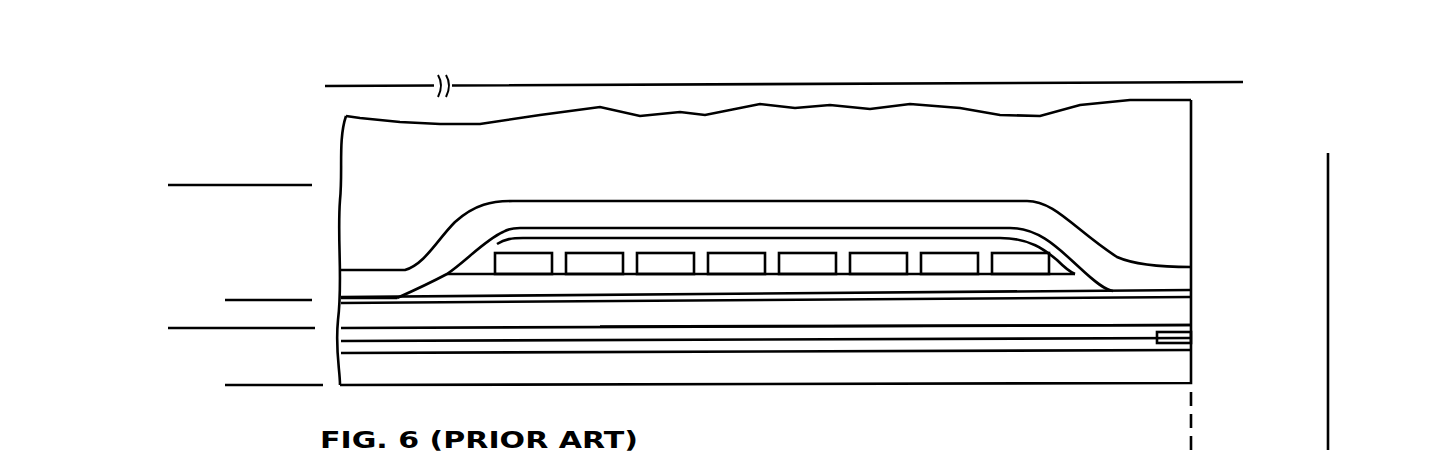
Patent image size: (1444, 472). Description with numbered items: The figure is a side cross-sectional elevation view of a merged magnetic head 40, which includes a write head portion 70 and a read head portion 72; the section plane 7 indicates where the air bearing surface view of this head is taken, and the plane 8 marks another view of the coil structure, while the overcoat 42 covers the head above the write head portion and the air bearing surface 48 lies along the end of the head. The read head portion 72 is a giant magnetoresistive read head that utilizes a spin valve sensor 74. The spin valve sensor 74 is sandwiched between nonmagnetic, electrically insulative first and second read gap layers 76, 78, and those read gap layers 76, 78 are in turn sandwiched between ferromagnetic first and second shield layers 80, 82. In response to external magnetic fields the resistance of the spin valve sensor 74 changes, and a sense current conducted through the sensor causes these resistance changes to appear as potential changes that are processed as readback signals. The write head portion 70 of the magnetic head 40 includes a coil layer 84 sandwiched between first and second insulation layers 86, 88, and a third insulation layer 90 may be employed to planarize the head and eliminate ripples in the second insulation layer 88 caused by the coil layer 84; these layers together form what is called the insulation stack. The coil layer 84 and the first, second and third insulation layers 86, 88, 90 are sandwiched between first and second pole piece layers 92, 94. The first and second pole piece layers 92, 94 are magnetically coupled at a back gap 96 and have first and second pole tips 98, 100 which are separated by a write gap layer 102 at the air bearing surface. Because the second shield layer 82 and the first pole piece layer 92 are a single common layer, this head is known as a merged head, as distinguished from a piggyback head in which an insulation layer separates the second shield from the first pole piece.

The plane 7—7 (ABS view section line) 7 is at (1352, 175).
The plane 8—8 (section line) 8 is at (348, 62).
The merged magnetic head 40 is at (302, 128).
The overcoat layer 42 is at (1170, 137).
The air bearing surface (ABS) 48 is at (1192, 393).
The write head portion 70 is at (263, 279).
The read head portion 72 is at (263, 425).
The spin valve sensor 74 is at (1192, 336).
The first read gap layer 76 is at (837, 353).
The second read gap layer 78 is at (793, 328).
The first shield layer 80 is at (932, 367).
The second shield layer 82 is at (895, 373).
The first pole piece layer 92 is at (1028, 312).
The coil layer 84 is at (807, 260).
The first insulation layer 86 is at (719, 283).
The second insulation layer 88 is at (1063, 263).
The third insulation layer 90 is at (521, 239).
The second pole piece layer 94 is at (928, 202).
The back gap 96 is at (363, 297).
The first pole tip 98 is at (1190, 312).
The second pole tip 100 is at (1187, 276).
The write gap layer 102 is at (1186, 292).